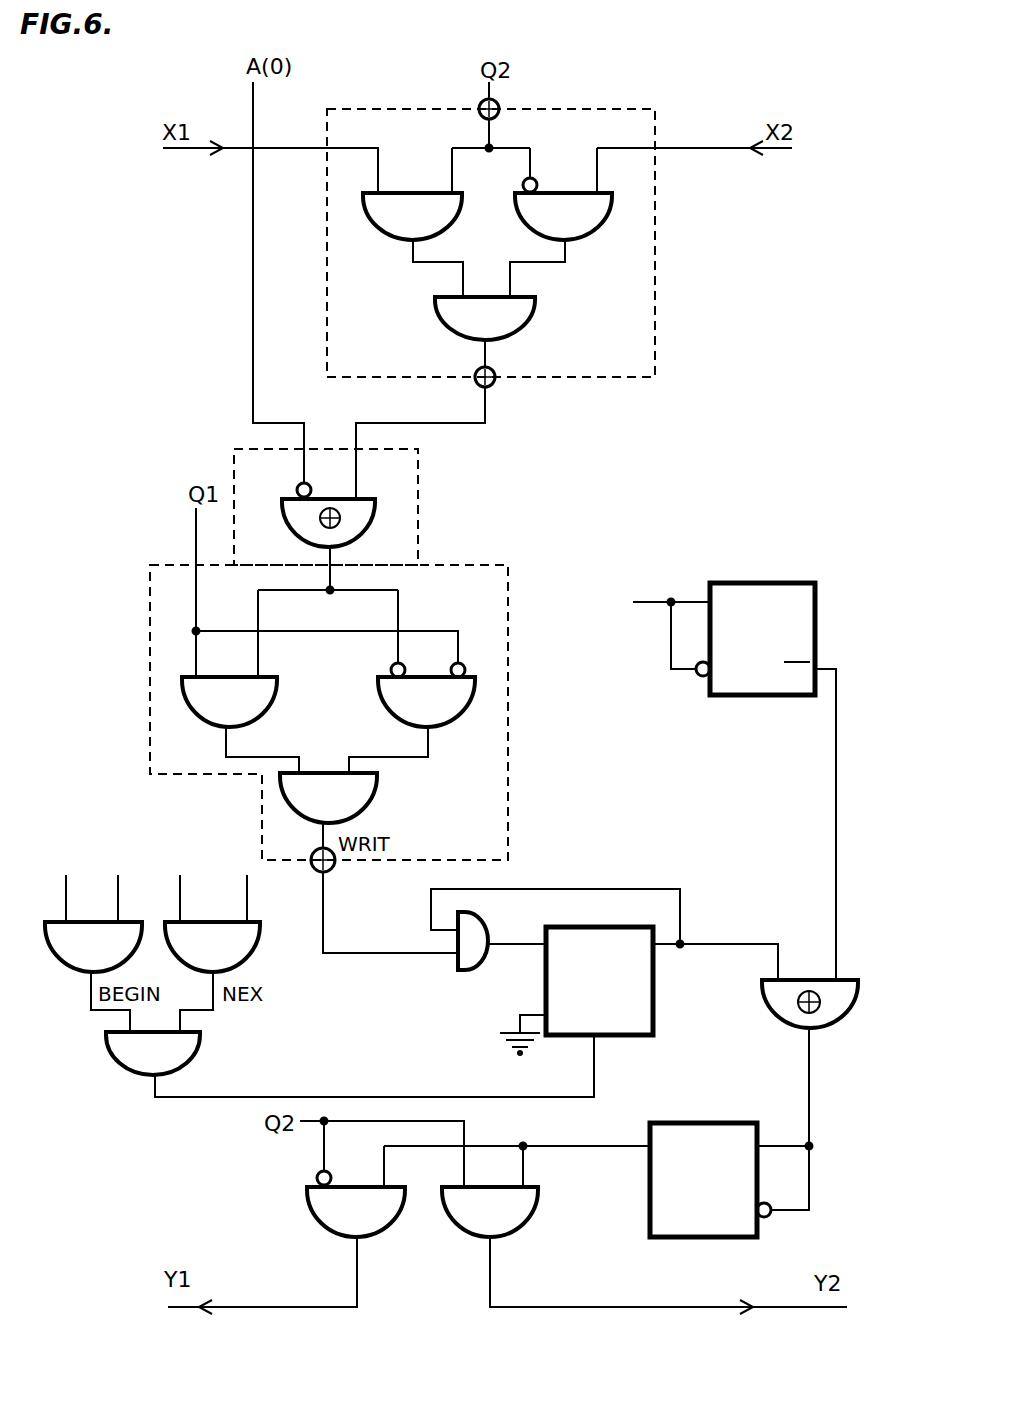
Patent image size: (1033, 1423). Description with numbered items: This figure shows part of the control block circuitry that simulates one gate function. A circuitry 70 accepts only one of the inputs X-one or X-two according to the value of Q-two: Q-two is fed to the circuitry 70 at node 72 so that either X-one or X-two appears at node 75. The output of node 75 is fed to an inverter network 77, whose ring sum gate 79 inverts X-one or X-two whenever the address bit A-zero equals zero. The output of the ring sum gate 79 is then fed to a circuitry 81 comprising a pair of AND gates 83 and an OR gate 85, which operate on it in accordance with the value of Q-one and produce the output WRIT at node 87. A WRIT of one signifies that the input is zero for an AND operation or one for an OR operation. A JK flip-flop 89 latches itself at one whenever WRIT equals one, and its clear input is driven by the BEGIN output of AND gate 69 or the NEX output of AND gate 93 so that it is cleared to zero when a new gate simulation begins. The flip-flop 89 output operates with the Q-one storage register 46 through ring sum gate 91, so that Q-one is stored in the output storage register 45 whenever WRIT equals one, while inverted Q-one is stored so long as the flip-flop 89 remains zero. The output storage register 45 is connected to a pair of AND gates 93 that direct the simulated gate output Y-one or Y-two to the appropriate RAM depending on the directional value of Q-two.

The circuitry 70 is at (422, 150).
The node 72 is at (482, 102).
The node 75 is at (492, 387).
The inverter network 77 is at (265, 489).
The ring sum gate 79 is at (365, 505).
The circuitry 81 is at (463, 618).
The AND gates 83 is at (237, 714).
The OR gate 85 is at (330, 810).
The node 87 is at (331, 870).
The JK flip-flop 89 is at (611, 996).
The ring sum gate 91 is at (816, 981).
The output storage register 45 is at (712, 1198).
The Q1 storage register 46 is at (774, 654).
The AND gate 69 is at (106, 954).
The AND gates 93 is at (226, 954).